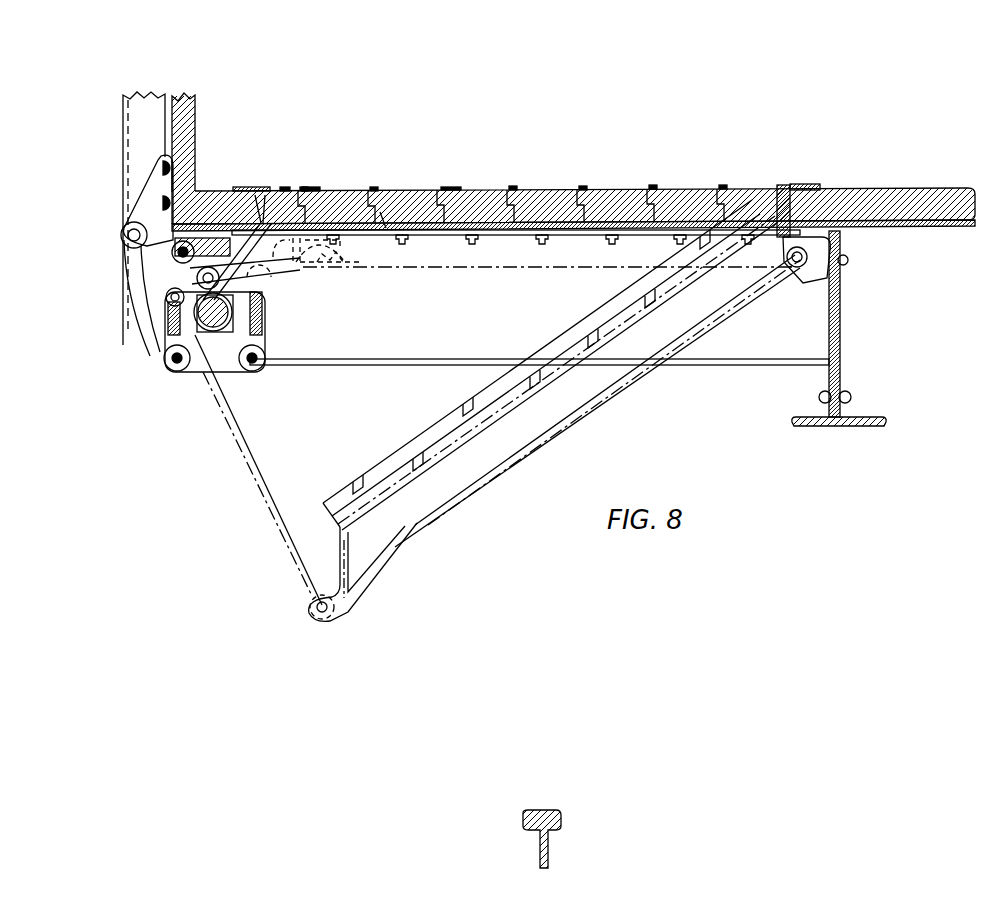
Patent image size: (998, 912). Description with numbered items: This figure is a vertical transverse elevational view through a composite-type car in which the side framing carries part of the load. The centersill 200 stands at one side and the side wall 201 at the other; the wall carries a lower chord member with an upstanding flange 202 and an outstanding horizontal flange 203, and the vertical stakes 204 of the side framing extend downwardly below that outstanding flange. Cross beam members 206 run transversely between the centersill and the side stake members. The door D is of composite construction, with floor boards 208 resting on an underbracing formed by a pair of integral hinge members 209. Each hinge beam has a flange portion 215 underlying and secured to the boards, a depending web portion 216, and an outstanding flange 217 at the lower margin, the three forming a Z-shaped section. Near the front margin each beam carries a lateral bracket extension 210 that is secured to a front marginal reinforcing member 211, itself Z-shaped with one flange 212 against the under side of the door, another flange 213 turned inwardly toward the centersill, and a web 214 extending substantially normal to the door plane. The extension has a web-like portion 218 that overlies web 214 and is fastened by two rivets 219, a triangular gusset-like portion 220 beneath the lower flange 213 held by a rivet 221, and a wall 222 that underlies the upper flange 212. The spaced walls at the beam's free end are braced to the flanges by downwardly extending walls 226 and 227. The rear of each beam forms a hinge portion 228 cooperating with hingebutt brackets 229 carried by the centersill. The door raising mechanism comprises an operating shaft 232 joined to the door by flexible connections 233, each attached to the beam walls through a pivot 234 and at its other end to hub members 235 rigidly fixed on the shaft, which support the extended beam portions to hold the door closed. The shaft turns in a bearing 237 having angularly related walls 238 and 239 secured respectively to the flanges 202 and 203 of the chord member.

The centersill 200 is at (839, 308).
The side wall 201 is at (183, 124).
The upstanding flange 202 is at (180, 173).
The outstanding horizontal flange 203 is at (223, 212).
The vertical stakes 204 is at (137, 147).
The cross beam members 206 is at (717, 345).
The floor boards 208 is at (530, 190).
The integral hinge members 209 is at (430, 253).
The lateral bracket extension 210 is at (288, 183).
The front marginal reinforcing member 211 is at (338, 191).
The flange 212 is at (298, 193).
The flange 213 is at (304, 262).
The web 214 is at (357, 191).
The flange portion 215 is at (552, 223).
The depending web portion 216 is at (516, 243).
The outstanding flange 217 is at (478, 325).
The web-like portion 218 is at (285, 263).
The rivets 219 is at (370, 208).
The gusset-like portion 220 is at (371, 268).
The rivet 221 is at (336, 263).
The wall 222 is at (284, 183).
The downwardly extending wall 226 is at (221, 198).
The downwardly extending wall 227 is at (172, 264).
The hinge portion 228 is at (812, 283).
The hingebutt brackets 229 is at (788, 268).
The operating shaft 232 is at (211, 320).
The flexible connections 233 is at (168, 360).
The pivot 234 is at (165, 292).
The hub members 235 is at (222, 402).
The bearing 237 is at (142, 214).
The wall 238 is at (167, 187).
The wall 239 is at (170, 252).
The door D is at (381, 229).